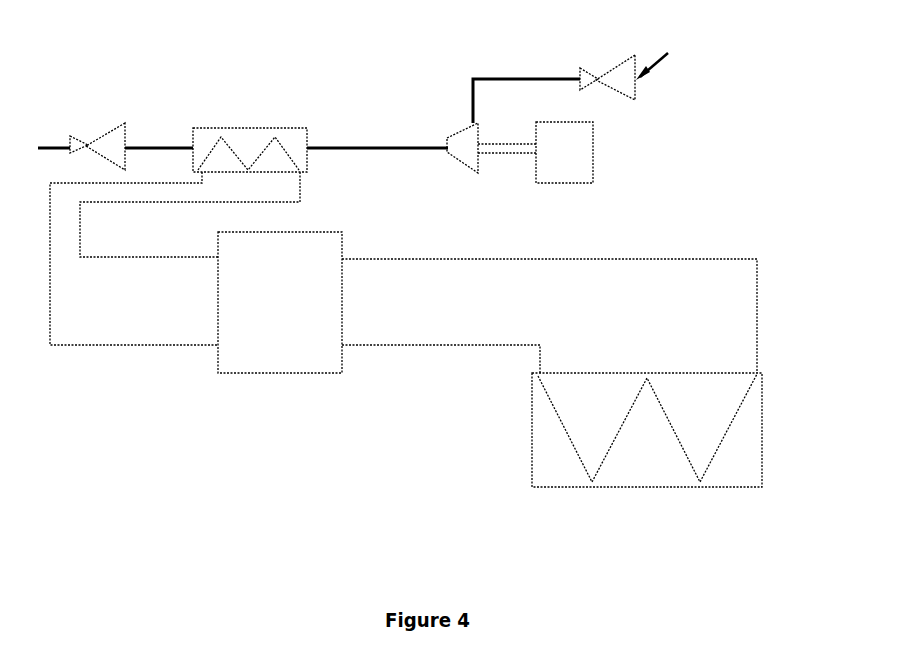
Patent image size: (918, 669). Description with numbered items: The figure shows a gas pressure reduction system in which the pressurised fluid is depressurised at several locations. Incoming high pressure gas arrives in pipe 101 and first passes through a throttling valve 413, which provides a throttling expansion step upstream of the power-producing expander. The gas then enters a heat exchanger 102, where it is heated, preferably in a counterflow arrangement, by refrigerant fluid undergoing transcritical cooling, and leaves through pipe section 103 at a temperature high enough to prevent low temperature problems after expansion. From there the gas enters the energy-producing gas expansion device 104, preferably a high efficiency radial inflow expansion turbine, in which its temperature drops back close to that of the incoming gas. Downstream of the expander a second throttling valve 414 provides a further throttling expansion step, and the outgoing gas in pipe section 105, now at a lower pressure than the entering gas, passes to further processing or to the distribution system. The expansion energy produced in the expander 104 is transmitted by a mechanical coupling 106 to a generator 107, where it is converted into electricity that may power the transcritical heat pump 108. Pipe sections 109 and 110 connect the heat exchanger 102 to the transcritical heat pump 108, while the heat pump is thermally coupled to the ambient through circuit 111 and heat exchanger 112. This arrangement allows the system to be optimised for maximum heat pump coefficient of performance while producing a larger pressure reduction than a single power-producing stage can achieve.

The pipe 101 is at (48, 148).
The throttling valve 413 is at (98, 125).
The heat exchanger 102 is at (235, 128).
The pipe section 103 is at (370, 142).
The gas expansion device 104 is at (450, 168).
The throttling valve 414 is at (593, 68).
The pipe section 105 is at (667, 55).
The mechanical coupling 106 is at (501, 153).
The generator 107 is at (593, 153).
The transcritical heat pump 108 is at (277, 373).
The pipe section 109 is at (147, 257).
The pipe section 110 is at (72, 345).
The circuit 111 is at (550, 262).
The heat exchanger 112 is at (762, 450).